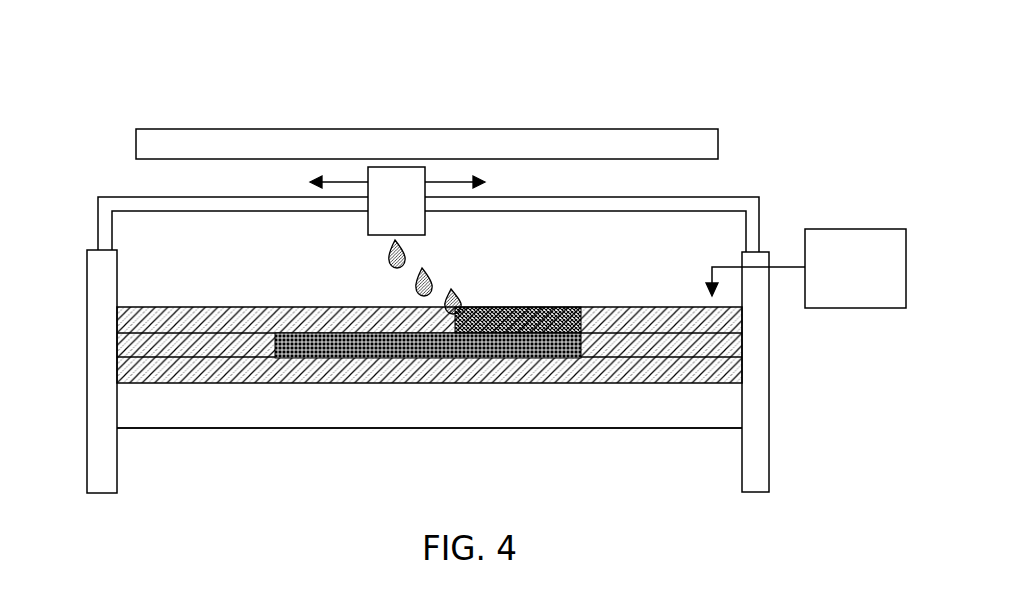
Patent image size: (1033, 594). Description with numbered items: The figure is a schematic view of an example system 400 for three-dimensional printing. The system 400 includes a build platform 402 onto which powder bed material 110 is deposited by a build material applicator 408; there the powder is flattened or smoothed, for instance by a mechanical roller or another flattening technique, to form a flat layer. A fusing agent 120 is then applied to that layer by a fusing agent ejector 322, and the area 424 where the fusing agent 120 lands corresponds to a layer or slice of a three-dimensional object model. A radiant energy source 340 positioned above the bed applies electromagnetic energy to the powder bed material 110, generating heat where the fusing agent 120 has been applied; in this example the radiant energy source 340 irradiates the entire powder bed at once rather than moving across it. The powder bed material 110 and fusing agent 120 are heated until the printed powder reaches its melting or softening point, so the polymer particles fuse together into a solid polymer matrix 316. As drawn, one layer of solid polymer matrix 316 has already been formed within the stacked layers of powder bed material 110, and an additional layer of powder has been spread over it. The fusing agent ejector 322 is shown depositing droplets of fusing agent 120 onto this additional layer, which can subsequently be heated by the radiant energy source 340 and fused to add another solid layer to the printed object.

The system for three-dimensional printing 400 is at (182, 53).
The radiant energy source 340 is at (447, 155).
The fusing agent ejector 322 is at (418, 212).
The fusing agent 120 is at (388, 258).
The powder bed material 110 is at (181, 337).
The solid polymer matrix 316 is at (392, 360).
The area where the fusing agent is applied 424 is at (496, 356).
The build platform 402 is at (587, 415).
The build material applicator 408 is at (836, 279).